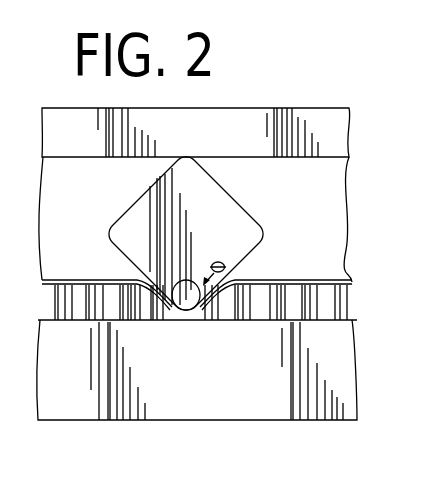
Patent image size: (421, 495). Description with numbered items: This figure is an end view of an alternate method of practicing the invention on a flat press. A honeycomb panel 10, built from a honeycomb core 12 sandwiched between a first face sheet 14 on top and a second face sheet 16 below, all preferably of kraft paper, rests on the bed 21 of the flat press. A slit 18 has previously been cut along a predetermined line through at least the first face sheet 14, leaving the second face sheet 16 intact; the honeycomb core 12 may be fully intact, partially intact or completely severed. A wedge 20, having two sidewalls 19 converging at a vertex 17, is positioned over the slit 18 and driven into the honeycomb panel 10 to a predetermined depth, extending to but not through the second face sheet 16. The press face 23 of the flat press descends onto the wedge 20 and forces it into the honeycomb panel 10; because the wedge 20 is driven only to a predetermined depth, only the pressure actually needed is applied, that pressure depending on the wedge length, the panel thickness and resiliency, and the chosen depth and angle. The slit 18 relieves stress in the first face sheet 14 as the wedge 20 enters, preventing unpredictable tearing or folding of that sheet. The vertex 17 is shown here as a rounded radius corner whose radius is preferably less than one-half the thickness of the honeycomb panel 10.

The honeycomb panel 10 is at (301, 268).
The honeycomb core 12 is at (272, 308).
The first face sheet 14 is at (44, 280).
The second face sheet 16 is at (129, 326).
The vertex 17 is at (166, 258).
The slit 18 is at (195, 310).
The sidewalls 19 is at (126, 262).
The wedge 20 is at (217, 218).
The bed 21 is at (170, 400).
The press face 23 is at (218, 132).